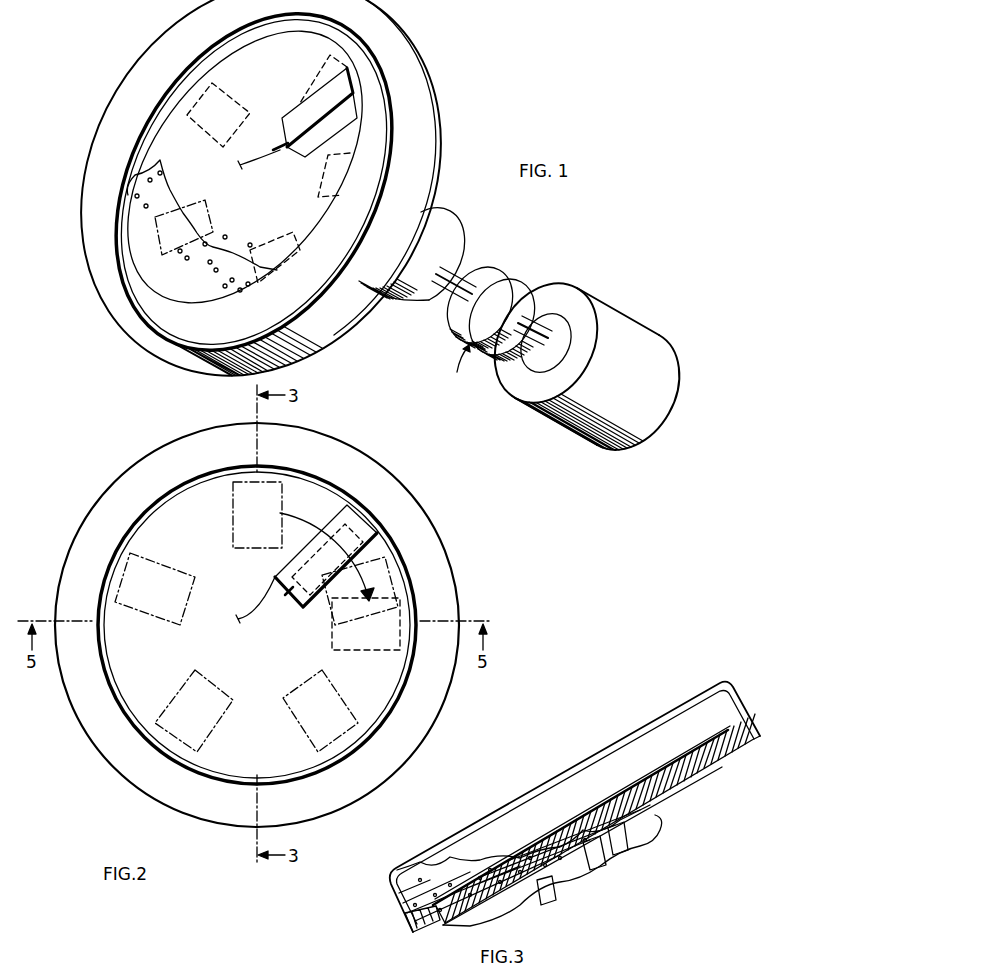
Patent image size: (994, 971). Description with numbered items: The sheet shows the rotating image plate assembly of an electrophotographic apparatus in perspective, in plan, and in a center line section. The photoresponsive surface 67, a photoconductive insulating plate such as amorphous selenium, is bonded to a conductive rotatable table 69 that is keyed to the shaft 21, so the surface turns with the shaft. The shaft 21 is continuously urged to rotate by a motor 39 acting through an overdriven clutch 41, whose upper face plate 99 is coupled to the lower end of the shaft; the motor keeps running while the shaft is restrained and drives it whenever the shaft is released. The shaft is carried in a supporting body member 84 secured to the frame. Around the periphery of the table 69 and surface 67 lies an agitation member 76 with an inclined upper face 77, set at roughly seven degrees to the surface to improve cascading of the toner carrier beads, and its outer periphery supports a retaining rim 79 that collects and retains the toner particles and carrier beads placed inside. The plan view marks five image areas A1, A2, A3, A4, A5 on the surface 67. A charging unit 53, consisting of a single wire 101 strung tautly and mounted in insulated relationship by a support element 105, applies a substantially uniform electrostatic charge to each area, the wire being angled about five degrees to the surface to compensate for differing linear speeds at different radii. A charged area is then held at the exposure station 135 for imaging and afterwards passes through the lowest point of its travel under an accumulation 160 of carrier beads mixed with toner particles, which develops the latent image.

In FIG. 1, the shaft 21 is at (442, 293).
In FIG. 1, the motor 39 is at (637, 375).
In FIG. 1, the overdriven clutch 41 is at (461, 367).
In FIG. 1, the charging unit 53 is at (320, 127).
In FIG. 2, the charging unit 53 is at (370, 532).
In FIG. 1, the photoresponsive surface 67 is at (277, 86).
In FIG. 2, the photoresponsive surface 67 is at (192, 538).
In FIG. 3, the photoresponsive surface 67 is at (638, 792).
In FIG. 3, the rotatable table 69 is at (442, 930).
In FIG. 3, the agitation member 76 is at (414, 935).
In FIG. 1, the inclined upper face 77 is at (178, 96).
In FIG. 2, the inclined upper face 77 is at (136, 531).
In FIG. 3, the inclined upper face 77 is at (581, 826).
In FIG. 1, the retaining rim 79 is at (424, 82).
In FIG. 2, the retaining rim 79 is at (109, 484).
In FIG. 3, the retaining rim 79 is at (392, 877).
In FIG. 1, the supporting body member 84 is at (442, 228).
In FIG. 1, the upper face plate 99 is at (507, 272).
In FIG. 1, the wire 101 is at (250, 162).
In FIG. 2, the wire 101 is at (250, 618).
In FIG. 1, the support element 105 is at (280, 155).
In FIG. 2, the support element 105 is at (286, 598).
In FIG. 2, the exposure station 135 is at (356, 652).
In FIG. 1, the accumulation of carrier beads and toner 160 is at (198, 290).
In FIG. 3, the accumulation of carrier beads and toner 160 is at (458, 872).
In FIG. 1, the image area A1 is at (203, 129).
In FIG. 2, the image area A1 is at (160, 612).
In FIG. 1, the image area A2 is at (215, 192).
In FIG. 2, the image area A2 is at (182, 692).
In FIG. 1, the image area A3 is at (256, 250).
In FIG. 2, the image area A3 is at (298, 730).
In FIG. 1, the image area A4 is at (325, 177).
In FIG. 2, the image area A4 is at (330, 592).
In FIG. 1, the image area A5 is at (322, 72).
In FIG. 2, the image area A5 is at (233, 540).